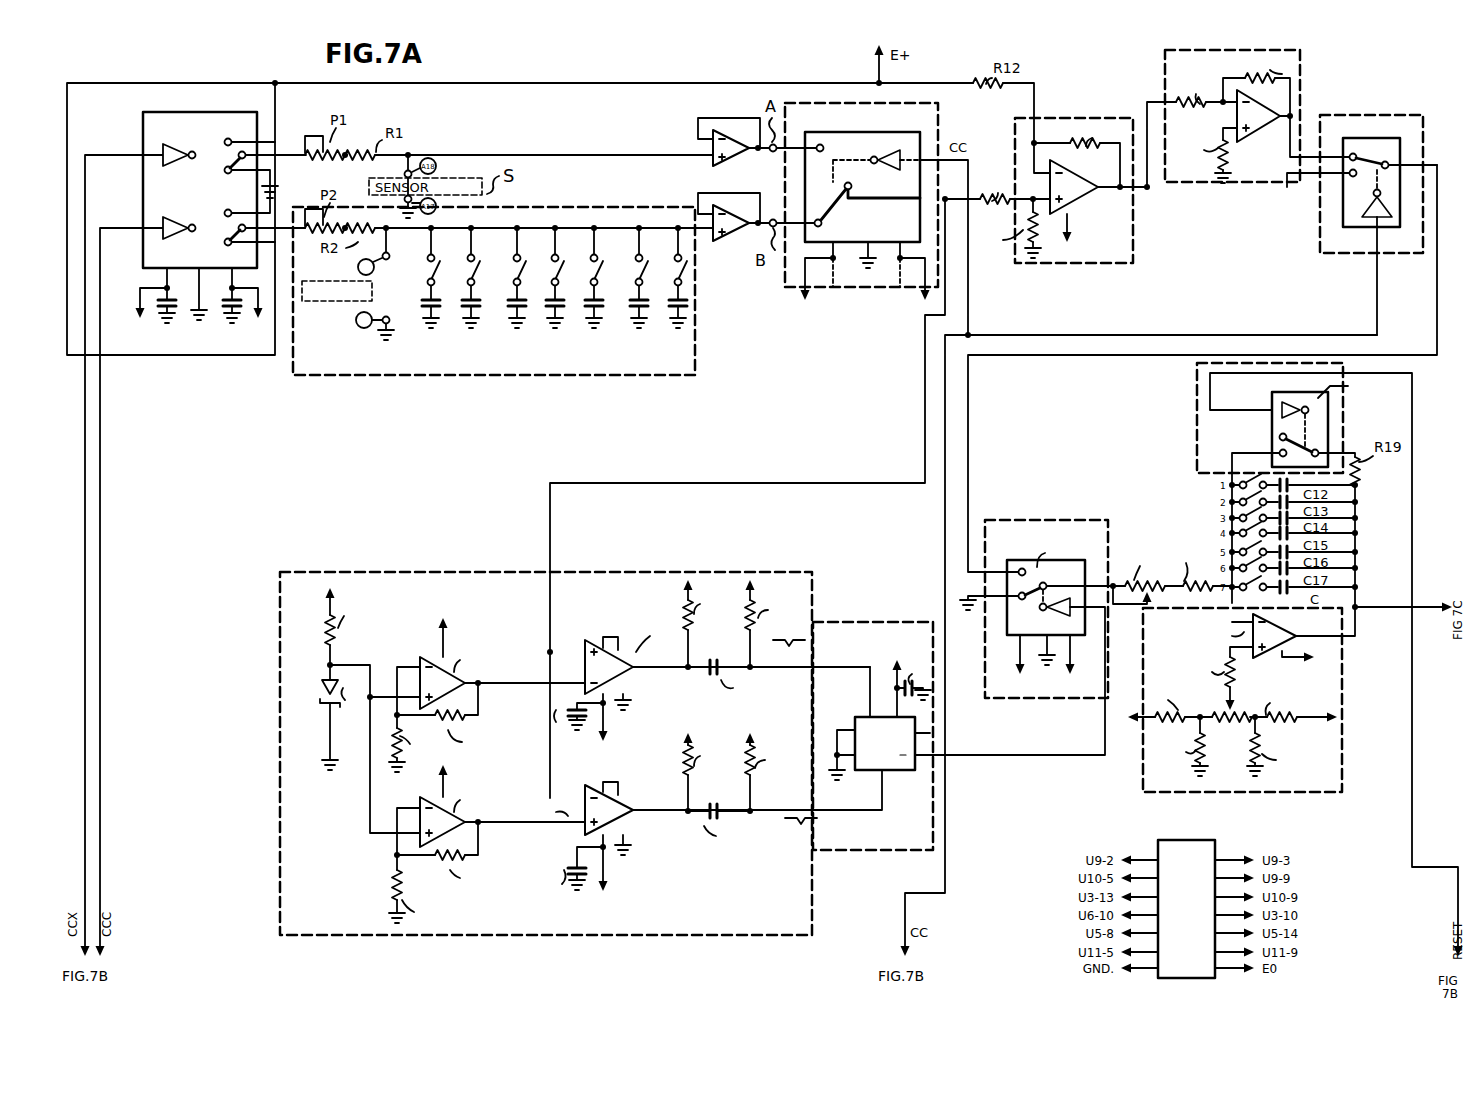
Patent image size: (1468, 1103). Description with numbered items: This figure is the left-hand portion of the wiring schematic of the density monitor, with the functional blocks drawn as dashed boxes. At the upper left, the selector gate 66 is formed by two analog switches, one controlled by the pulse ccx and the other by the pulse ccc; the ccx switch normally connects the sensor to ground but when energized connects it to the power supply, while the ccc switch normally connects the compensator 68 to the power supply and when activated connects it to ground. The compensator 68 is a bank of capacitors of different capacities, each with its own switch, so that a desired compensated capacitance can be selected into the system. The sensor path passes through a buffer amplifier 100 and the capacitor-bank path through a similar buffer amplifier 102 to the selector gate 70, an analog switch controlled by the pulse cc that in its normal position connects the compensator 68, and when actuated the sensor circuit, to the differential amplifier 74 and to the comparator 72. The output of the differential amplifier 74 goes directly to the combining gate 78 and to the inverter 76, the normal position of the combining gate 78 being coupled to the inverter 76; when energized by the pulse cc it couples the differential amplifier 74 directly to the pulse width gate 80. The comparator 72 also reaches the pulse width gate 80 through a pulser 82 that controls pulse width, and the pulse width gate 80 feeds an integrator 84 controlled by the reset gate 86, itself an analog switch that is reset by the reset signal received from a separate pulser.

The selector gate 66 is at (144, 112).
The compensator 68 is at (482, 377).
The selector gate 70 is at (940, 130).
The comparator 72 is at (402, 572).
The differential amplifier 74 is at (1062, 118).
The inverter 76 is at (1302, 86).
The combining gate 78 is at (1439, 92).
The pulse width gate 80 is at (1027, 520).
The pulser 82 is at (857, 622).
The integrator 84 is at (1143, 770).
The reset gate 86 is at (1196, 372).
The buffer amplifier 100 is at (733, 165).
The buffer amplifier 102 is at (733, 241).